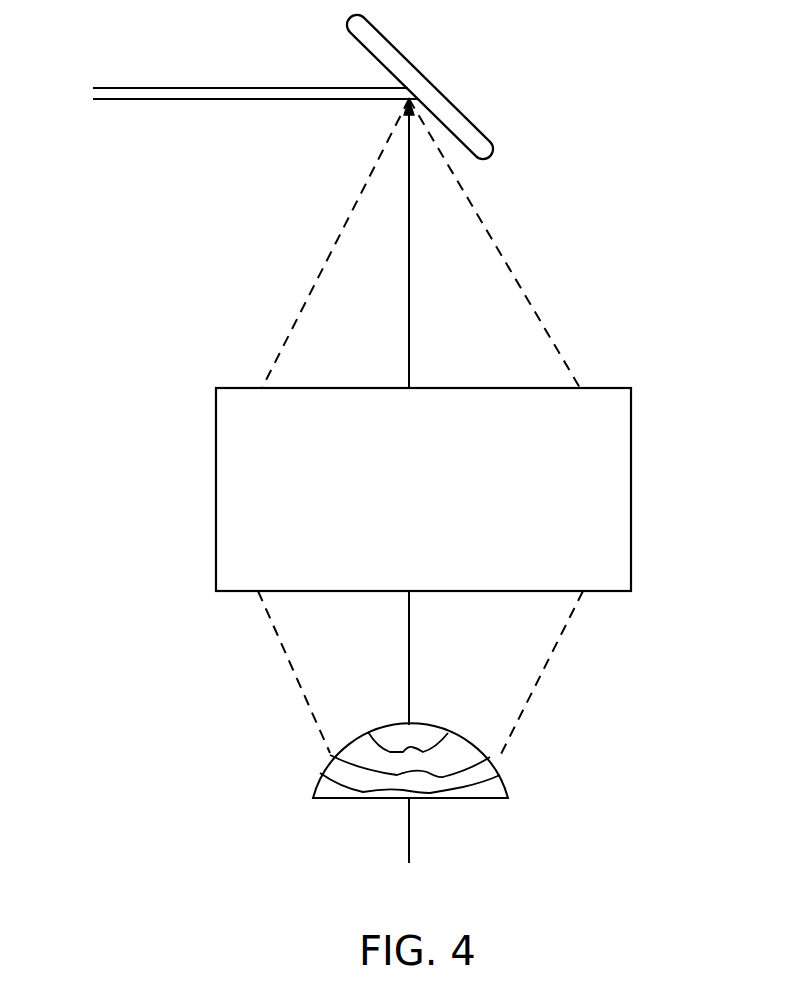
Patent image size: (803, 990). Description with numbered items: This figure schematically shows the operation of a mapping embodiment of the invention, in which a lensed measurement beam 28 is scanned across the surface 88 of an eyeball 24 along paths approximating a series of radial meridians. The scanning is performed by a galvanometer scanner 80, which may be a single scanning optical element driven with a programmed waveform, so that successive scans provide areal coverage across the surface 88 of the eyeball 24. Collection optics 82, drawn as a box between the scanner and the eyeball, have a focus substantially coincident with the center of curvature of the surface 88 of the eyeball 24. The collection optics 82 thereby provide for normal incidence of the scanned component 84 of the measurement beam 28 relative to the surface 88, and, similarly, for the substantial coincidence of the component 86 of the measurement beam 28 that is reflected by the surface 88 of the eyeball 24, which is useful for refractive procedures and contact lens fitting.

The eyeball 24 is at (457, 800).
The lensed measurement beam 28 is at (212, 100).
The galvanometer scanner 80 is at (412, 67).
The collection optics 82 is at (632, 490).
The scanned component 84 is at (520, 285).
The reflected component 86 is at (241, 86).
The surface 88 is at (507, 777).